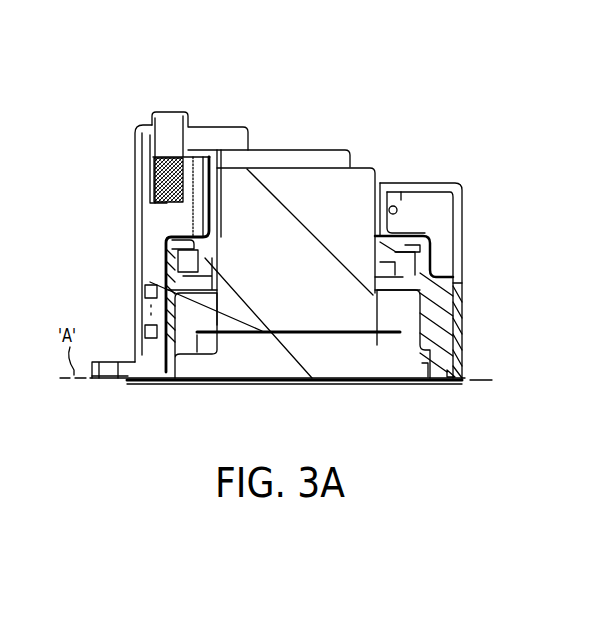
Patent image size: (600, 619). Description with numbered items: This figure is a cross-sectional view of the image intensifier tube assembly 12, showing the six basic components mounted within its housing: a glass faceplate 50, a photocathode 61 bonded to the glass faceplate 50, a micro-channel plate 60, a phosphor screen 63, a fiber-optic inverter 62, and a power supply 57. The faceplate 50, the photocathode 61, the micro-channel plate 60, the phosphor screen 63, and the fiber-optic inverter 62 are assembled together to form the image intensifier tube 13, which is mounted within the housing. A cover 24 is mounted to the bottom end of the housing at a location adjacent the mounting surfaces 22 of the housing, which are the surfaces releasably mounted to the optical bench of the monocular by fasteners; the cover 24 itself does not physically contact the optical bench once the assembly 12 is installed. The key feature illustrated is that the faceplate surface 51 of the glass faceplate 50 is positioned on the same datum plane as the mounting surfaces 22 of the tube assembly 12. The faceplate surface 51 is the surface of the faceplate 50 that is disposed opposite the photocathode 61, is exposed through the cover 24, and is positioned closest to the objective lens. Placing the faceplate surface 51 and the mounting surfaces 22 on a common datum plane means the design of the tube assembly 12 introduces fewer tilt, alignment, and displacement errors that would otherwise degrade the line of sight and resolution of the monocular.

The image intensifier tube assembly 12 is at (86, 66).
The image intensifier tube 13 is at (263, 218).
The mounting surfaces 22 is at (103, 384).
The cover 24 is at (418, 380).
The glass faceplate 50 is at (347, 358).
The faceplate surface 51 is at (292, 380).
The power supply 57 is at (447, 327).
The micro-channel plate 60 is at (187, 283).
The photocathode 61 is at (240, 334).
The fiber-optic inverter 62 is at (357, 180).
The phosphor screen 63 is at (205, 250).